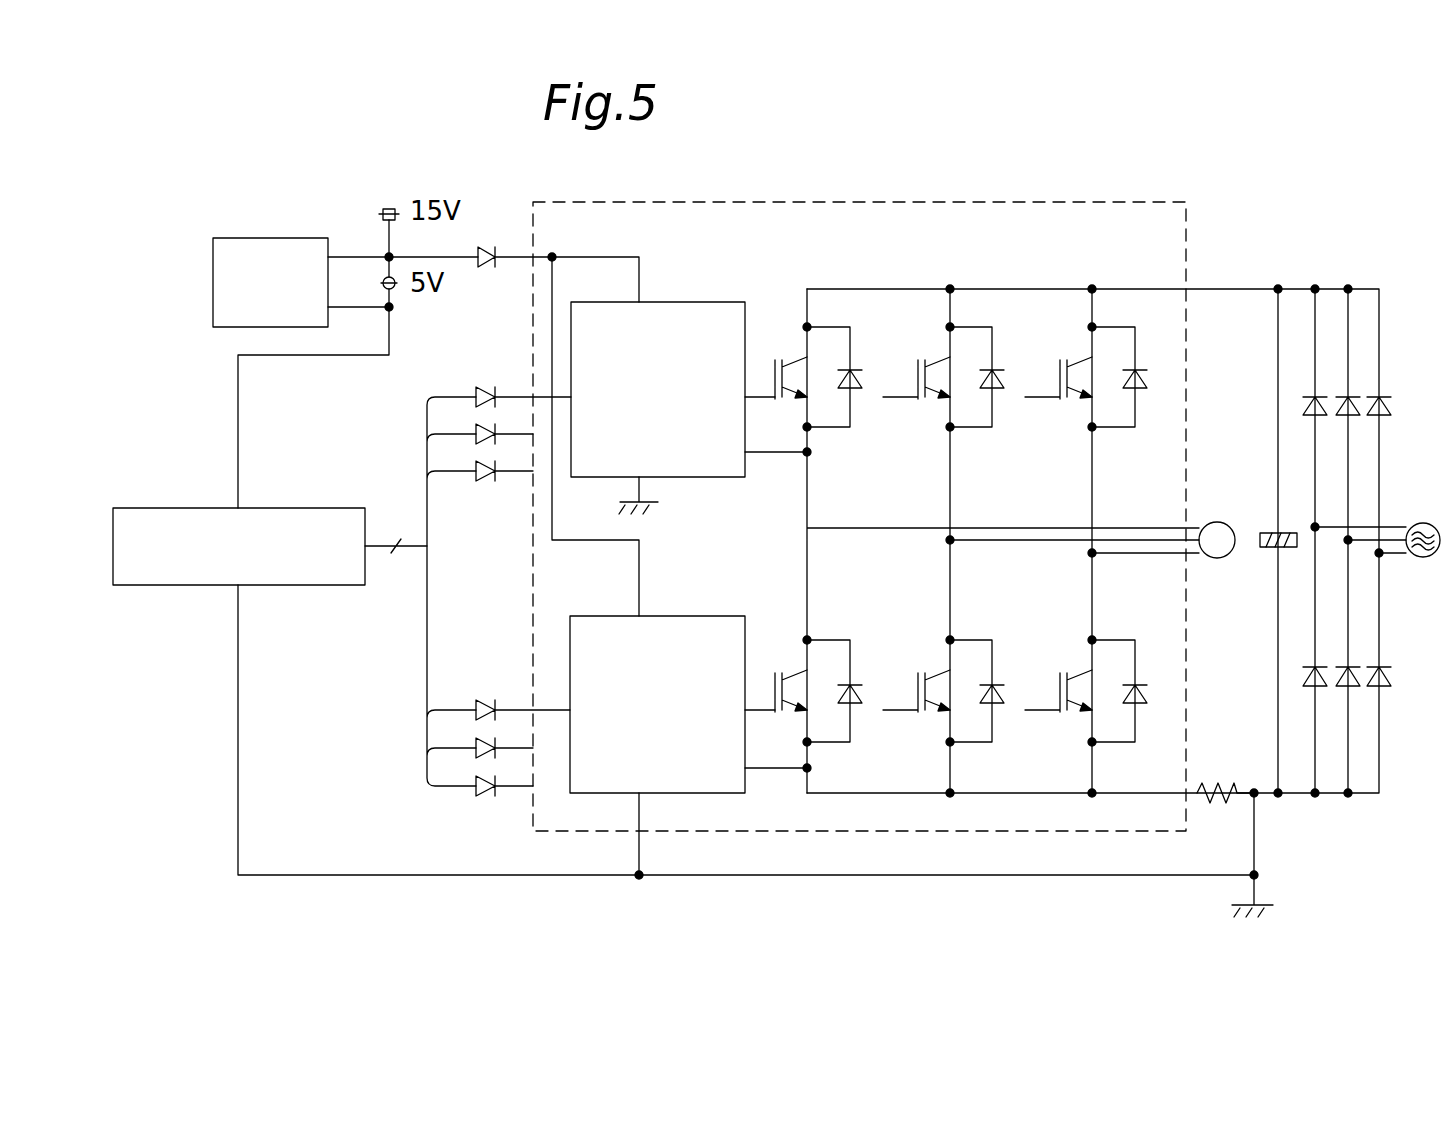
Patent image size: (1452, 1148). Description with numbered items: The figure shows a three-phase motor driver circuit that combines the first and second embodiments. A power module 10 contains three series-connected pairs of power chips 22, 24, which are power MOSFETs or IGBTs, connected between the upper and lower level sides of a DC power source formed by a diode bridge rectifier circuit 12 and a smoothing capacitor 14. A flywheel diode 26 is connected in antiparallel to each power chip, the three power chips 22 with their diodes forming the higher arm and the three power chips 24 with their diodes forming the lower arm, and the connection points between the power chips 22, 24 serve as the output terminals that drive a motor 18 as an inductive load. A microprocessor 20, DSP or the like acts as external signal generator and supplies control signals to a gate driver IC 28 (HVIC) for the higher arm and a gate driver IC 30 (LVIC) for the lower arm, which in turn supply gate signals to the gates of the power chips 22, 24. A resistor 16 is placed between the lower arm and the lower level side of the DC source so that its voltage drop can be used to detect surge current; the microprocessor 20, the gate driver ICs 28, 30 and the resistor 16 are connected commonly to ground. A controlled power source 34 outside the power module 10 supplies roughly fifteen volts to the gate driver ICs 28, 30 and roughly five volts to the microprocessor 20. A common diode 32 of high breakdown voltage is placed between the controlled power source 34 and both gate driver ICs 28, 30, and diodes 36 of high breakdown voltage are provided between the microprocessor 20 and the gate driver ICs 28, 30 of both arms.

The power module 10 is at (1187, 240).
The diode bridge rectifier circuit 12 is at (1398, 326).
The smoothing capacitor 14 is at (1266, 533).
The resistor 16 is at (1232, 785).
The motor 18 is at (1222, 558).
The microprocessor 20 is at (348, 508).
The power chip 22 is at (772, 372).
The power chip 24 is at (772, 684).
The flywheel diode 26 is at (855, 388).
The gate driver IC 28 is at (697, 302).
The gate driver IC 30 is at (590, 616).
The common diode 32 is at (484, 246).
The controlled power source 34 is at (322, 238).
The diodes 36 is at (472, 470).